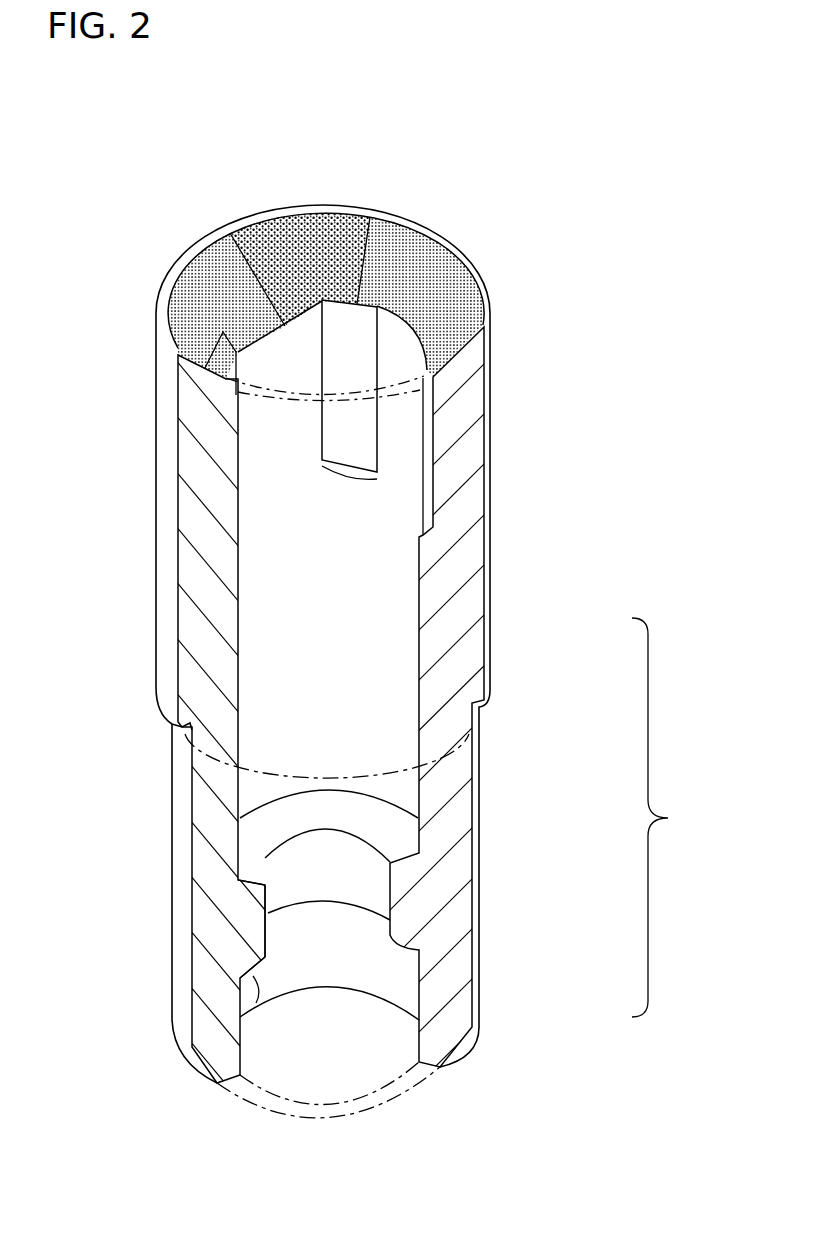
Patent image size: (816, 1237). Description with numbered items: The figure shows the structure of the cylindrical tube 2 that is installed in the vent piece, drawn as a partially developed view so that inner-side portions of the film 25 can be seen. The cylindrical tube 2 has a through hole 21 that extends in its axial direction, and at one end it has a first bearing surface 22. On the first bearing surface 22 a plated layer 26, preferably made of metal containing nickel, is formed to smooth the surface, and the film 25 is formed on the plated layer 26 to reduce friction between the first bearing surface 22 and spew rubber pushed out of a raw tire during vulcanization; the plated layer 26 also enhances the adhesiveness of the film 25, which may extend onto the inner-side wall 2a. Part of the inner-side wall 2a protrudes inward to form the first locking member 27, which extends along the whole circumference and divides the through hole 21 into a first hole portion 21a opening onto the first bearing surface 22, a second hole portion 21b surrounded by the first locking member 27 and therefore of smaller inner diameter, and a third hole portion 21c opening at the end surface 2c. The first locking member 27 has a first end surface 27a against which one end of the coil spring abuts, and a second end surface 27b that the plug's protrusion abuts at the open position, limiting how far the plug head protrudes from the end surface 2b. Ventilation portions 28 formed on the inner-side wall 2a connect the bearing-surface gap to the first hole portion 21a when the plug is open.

The cylindrical tube 2 is at (495, 388).
The inner-side wall 2a is at (273, 558).
The end surface 2b is at (453, 247).
The end surface 2c is at (437, 1070).
The through hole 21 is at (668, 817).
The first hole portion 21a is at (380, 650).
The second hole portion 21b is at (365, 870).
The third hole portion 21c is at (398, 965).
The first bearing surface 22 is at (401, 262).
The film 25 is at (205, 293).
The plated layer 26 is at (288, 240).
The first locking member 27 is at (252, 923).
The first end surface 27a is at (252, 845).
The second end surface 27b is at (243, 1000).
The ventilation portion 28 is at (343, 418).